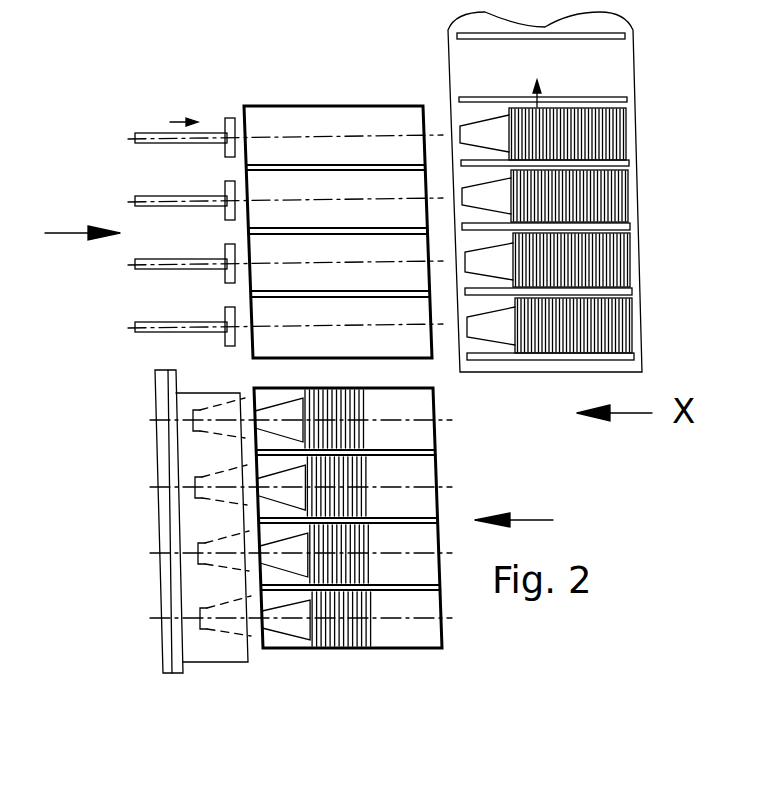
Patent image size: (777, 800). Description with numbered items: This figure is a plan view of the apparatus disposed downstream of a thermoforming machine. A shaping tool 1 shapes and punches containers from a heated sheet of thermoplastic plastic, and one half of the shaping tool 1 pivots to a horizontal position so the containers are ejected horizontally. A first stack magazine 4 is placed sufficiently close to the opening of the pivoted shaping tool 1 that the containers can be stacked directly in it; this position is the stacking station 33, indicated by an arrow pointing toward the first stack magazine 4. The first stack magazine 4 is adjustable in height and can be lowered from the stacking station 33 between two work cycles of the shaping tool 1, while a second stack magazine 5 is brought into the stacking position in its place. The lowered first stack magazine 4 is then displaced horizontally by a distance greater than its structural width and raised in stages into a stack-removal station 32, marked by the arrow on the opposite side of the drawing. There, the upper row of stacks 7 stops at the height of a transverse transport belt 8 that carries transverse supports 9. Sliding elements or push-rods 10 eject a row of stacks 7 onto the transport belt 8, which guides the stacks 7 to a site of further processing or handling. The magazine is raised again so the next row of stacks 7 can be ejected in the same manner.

The shaping tool 1 is at (192, 590).
The first stack magazine 4 is at (443, 630).
The second stack magazine 5 is at (333, 106).
The stacks 7 is at (600, 129).
The transverse transport belt 8 is at (617, 77).
The transverse supports 9 is at (607, 38).
The push-rods 10 is at (155, 133).
The stack-removal station 32 is at (82, 222).
The stacking station 33 is at (514, 507).